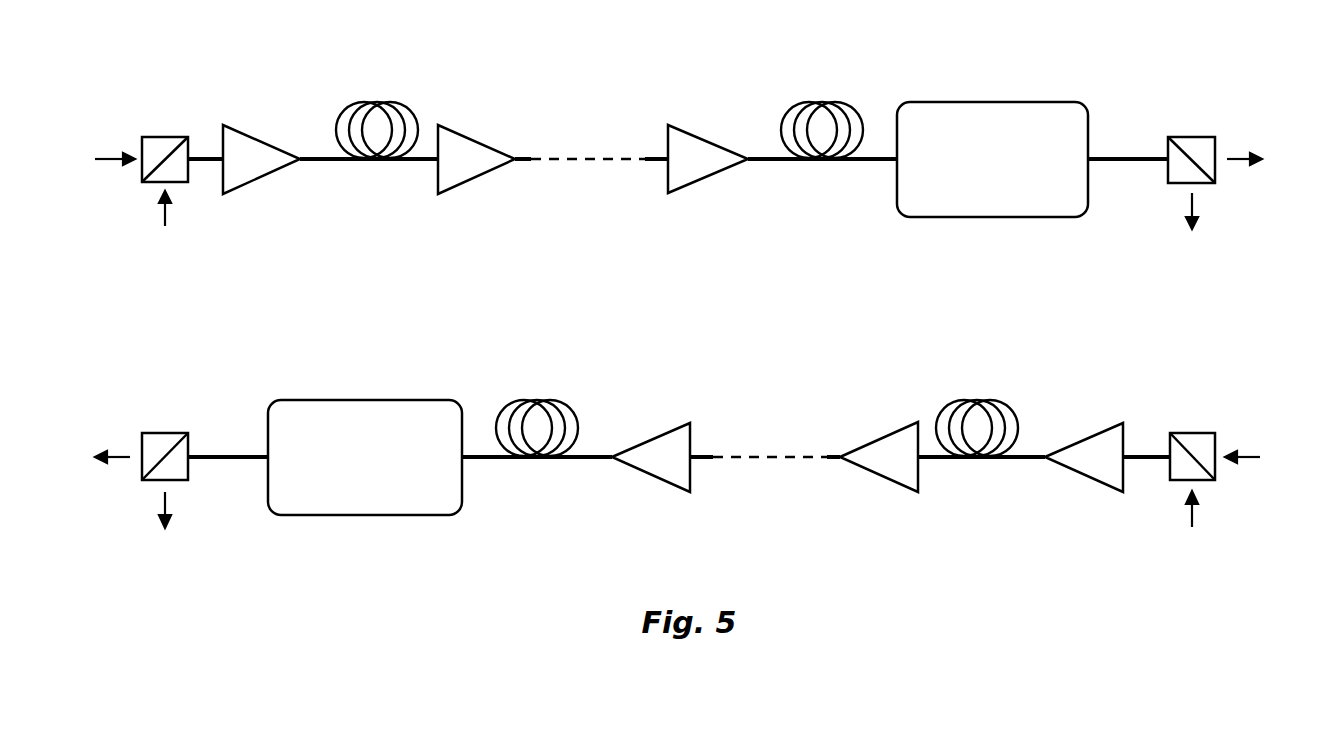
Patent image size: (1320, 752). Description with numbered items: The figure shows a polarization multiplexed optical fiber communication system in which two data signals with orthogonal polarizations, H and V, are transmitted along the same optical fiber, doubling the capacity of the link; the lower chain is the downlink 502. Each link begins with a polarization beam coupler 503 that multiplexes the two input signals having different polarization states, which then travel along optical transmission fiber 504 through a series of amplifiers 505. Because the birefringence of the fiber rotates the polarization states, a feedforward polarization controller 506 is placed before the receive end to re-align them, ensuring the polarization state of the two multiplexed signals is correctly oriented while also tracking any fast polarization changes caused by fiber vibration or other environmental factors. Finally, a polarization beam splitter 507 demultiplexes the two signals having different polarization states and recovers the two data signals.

The downlink 502 is at (679, 317).
The polarization beam coupler 503 is at (167, 173).
The optical transmission fiber 504 is at (346, 104).
The amplifiers 505 is at (240, 168).
The feedforward polarization controller 506 is at (995, 102).
The polarization beam splitter 507 is at (1172, 172).